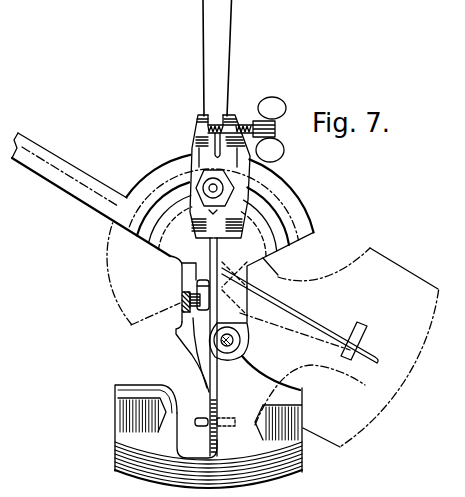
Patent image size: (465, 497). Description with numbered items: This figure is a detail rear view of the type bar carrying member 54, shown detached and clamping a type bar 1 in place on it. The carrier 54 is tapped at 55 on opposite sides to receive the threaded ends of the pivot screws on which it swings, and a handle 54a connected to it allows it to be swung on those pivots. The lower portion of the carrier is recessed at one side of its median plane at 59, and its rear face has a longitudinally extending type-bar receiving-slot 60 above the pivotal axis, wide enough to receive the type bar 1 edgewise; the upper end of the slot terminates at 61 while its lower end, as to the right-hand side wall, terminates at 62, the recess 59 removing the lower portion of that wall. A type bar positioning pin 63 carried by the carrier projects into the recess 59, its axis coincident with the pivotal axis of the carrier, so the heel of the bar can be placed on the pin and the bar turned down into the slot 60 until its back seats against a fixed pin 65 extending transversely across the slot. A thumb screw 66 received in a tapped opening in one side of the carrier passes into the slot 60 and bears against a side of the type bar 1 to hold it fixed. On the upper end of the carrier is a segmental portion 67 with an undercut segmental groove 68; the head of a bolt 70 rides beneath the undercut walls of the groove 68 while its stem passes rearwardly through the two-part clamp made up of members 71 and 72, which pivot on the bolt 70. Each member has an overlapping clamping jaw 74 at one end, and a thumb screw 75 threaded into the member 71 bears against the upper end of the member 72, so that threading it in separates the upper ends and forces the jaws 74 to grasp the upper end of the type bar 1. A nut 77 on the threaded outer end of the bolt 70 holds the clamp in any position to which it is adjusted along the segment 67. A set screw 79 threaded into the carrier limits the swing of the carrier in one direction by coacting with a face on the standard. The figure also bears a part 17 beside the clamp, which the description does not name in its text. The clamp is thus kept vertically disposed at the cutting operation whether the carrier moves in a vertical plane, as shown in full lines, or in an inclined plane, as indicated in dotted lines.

The type bar 1 is at (207, 403).
The rod 17 is at (217, 252).
The type bar carrying member 54 is at (337, 347).
The handle 54a is at (233, 50).
The tapped portion 55 is at (116, 427).
The recess 59 is at (174, 418).
The type-bar receiving-slot 60 is at (211, 283).
The upper end of the slot 61 is at (210, 298).
The lower end of the slot 62 is at (208, 392).
The type bar positioning pin 63 is at (345, 356).
The fixed pin 65 is at (197, 284).
The thumb screw 66 is at (182, 300).
The segmental portion 67 is at (106, 322).
The undercut segmental groove 68 is at (273, 216).
The bolt 70 is at (208, 187).
The clamp member 71 is at (230, 121).
The clamp member 72 is at (202, 118).
The clamping jaw 74 is at (201, 238).
The thumb screw 75 is at (286, 99).
The nut 77 is at (229, 180).
The set screw 79 is at (242, 341).